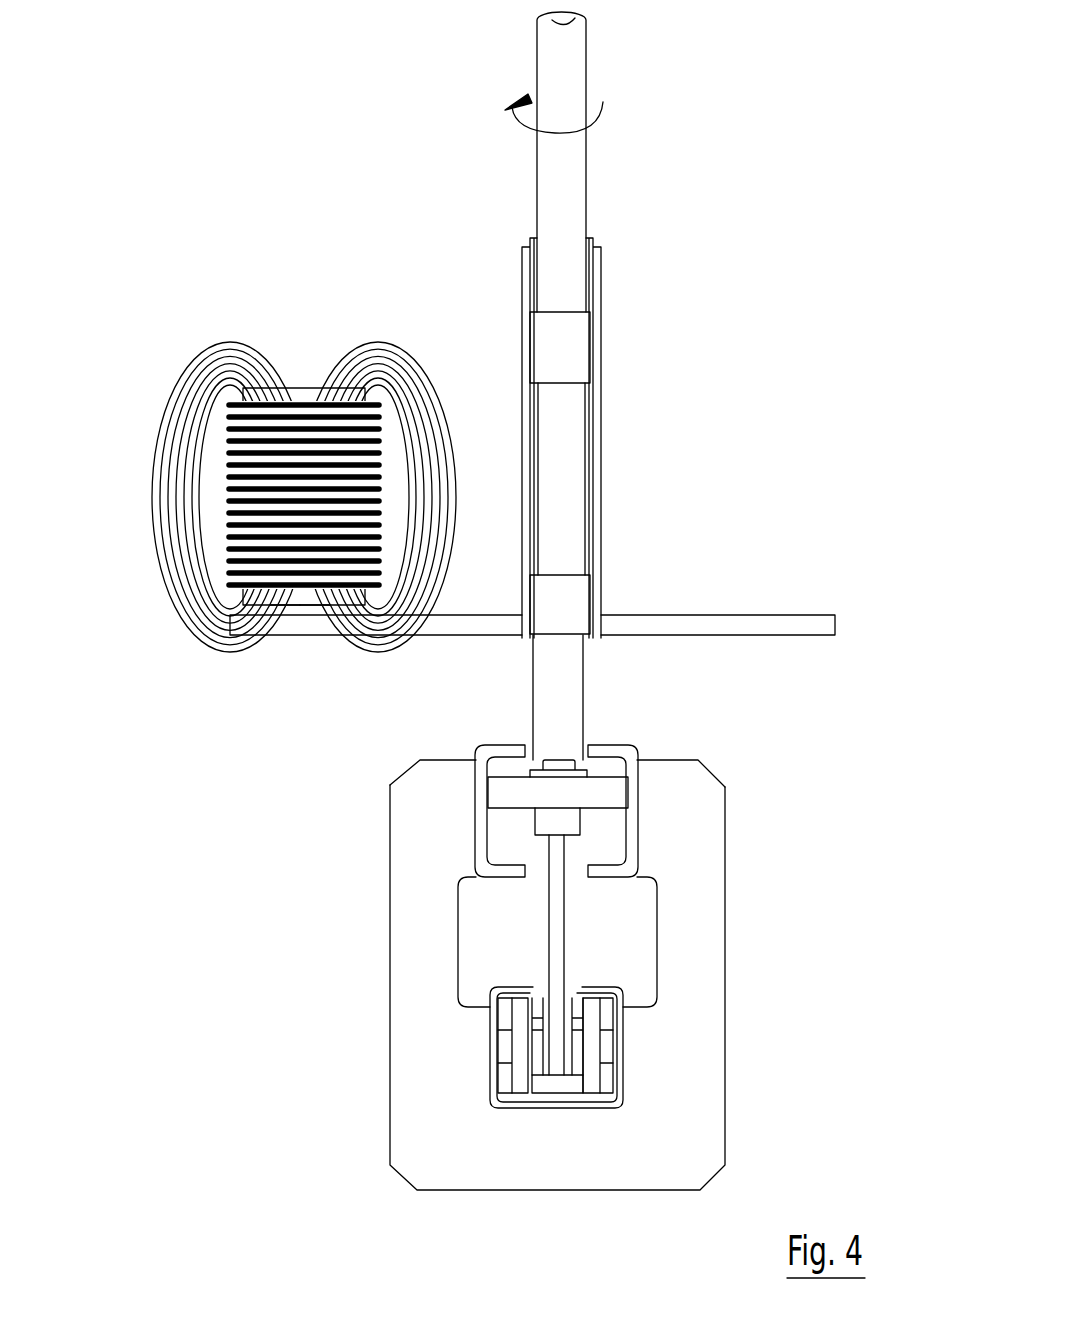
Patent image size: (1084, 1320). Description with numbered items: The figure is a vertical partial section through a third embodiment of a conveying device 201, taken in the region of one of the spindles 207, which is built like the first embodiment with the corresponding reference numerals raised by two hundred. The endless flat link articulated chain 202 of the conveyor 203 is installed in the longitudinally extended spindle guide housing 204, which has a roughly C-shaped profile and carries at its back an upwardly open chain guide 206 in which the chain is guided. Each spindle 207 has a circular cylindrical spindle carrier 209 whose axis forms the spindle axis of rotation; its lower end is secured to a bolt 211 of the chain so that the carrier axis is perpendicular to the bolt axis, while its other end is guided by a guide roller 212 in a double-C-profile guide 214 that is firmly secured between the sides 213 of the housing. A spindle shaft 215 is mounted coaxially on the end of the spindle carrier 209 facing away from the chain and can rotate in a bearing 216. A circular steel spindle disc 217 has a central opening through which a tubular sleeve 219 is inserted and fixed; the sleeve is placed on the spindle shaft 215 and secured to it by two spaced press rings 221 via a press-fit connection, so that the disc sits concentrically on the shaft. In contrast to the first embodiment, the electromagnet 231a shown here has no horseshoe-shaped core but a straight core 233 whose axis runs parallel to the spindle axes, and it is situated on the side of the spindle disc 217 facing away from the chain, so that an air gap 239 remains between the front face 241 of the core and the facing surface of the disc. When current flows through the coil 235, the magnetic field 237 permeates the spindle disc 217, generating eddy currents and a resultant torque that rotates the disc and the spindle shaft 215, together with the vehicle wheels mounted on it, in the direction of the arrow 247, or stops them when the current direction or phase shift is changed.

The conveying device 201 is at (300, 77).
The endless flat link articulated chain 202 is at (522, 1090).
The conveyor 203 is at (727, 1058).
The spindle guide housing 204 is at (692, 967).
The chain guide 206 is at (615, 987).
The spindle 207 is at (603, 473).
The spindle carrier 209 is at (553, 925).
The bolt 211 is at (505, 1042).
The guide roller 212 is at (618, 795).
The sides 213 is at (440, 784).
The double-C-profile guide 214 is at (508, 745).
The spindle shaft 215 is at (557, 190).
The bearing 216 is at (555, 745).
The spindle disc 217 is at (765, 625).
The tubular sleeve 219 is at (560, 345).
The press rings 221 is at (603, 330).
The electromagnet 231a is at (202, 367).
The straight core 233 is at (301, 400).
The coil 235 is at (380, 460).
The magnetic field 237 is at (198, 555).
The air gap 239 is at (312, 607).
The front face 241 is at (292, 607).
The arrow 247 is at (603, 102).